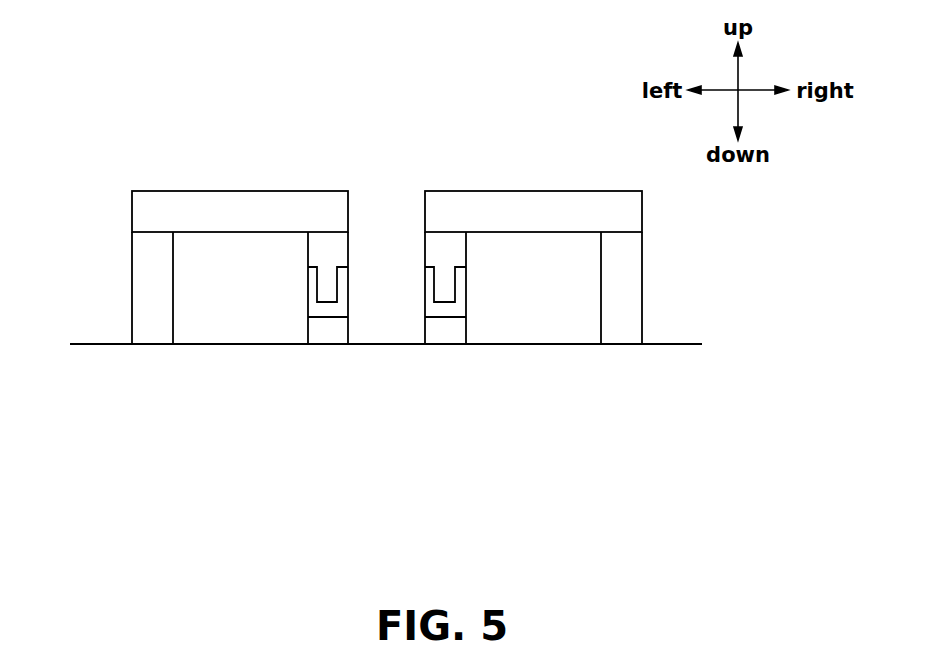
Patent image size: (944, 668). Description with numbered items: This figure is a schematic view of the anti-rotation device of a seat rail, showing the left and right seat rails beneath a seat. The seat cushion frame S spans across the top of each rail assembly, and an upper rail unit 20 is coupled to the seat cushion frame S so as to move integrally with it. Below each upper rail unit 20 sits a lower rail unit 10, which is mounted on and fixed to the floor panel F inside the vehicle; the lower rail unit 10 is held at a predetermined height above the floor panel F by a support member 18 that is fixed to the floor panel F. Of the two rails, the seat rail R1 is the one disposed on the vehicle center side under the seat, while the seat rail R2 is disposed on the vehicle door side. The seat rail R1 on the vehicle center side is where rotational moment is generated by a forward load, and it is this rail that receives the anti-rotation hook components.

The seat cushion frame S is at (248, 198).
The seat rail on the vehicle center side R1 is at (352, 243).
The seat rail on the door side R2 is at (145, 285).
The floor panel F is at (680, 343).
The lower rail unit 10 is at (312, 292).
The support member 18 is at (327, 332).
The upper rail unit 20 is at (432, 252).